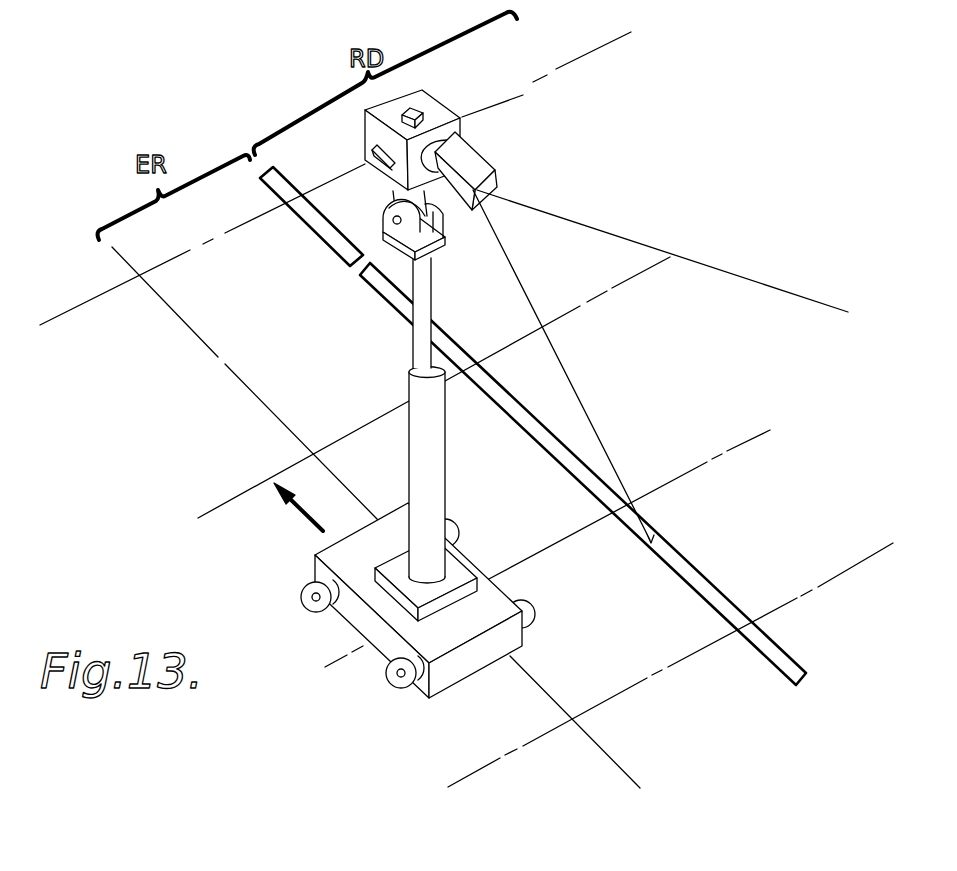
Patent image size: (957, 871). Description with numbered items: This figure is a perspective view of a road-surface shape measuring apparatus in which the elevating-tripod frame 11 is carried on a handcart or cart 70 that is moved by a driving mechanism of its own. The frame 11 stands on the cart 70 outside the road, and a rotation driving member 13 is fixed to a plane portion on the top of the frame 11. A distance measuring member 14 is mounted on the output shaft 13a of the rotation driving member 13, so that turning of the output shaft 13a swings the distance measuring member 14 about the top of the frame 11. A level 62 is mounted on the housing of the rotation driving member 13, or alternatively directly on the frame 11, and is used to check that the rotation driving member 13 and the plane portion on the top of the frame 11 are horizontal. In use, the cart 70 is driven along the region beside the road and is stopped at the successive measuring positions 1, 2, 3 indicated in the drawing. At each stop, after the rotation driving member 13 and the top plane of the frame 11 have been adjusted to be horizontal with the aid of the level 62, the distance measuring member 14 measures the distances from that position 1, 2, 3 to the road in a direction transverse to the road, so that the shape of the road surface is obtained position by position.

The measuring position 1 is at (651, 680).
The measuring position 2 is at (528, 563).
The measuring position 3 is at (415, 402).
The frame 11 is at (446, 460).
The rotation driving member 13 is at (365, 128).
The output shaft 13a is at (432, 138).
The distance measuring member 14 is at (492, 165).
The level 62 is at (386, 172).
The handcart or cart 70 is at (503, 584).